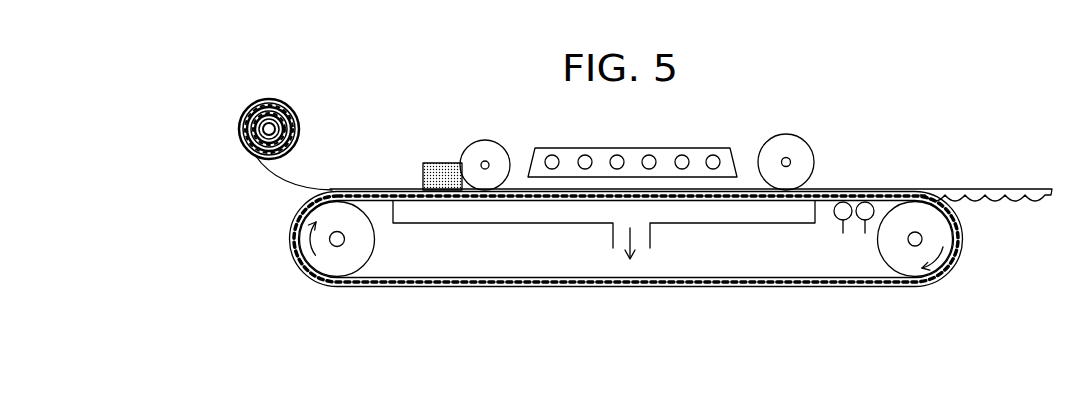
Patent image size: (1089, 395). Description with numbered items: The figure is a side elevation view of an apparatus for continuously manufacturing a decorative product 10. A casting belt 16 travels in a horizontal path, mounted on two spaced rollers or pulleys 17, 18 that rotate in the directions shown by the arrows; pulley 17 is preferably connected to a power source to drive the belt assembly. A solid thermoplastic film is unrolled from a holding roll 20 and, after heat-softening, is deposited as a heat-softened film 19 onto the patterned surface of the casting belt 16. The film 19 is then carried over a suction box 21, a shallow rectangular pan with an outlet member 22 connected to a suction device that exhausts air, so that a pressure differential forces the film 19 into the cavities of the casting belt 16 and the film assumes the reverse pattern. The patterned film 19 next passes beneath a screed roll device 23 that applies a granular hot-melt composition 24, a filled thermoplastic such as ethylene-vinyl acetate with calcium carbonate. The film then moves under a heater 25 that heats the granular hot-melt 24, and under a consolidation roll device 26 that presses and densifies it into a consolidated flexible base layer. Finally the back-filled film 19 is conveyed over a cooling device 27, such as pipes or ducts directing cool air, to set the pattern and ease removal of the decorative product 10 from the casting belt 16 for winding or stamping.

The decorative product 10 is at (1030, 189).
The casting belt 16 is at (677, 287).
The pulley 17 is at (318, 258).
The pulley 18 is at (943, 257).
The heat-softened film 19 is at (270, 173).
The holding roll 20 is at (240, 128).
The suction box 21 is at (437, 224).
The outlet member 22 is at (651, 237).
The screed roll device 23 is at (477, 147).
The granular hot-melt composition 24 is at (437, 165).
The heater 25 is at (607, 147).
The consolidation roll device 26 is at (808, 148).
The cooling device 27 is at (854, 232).